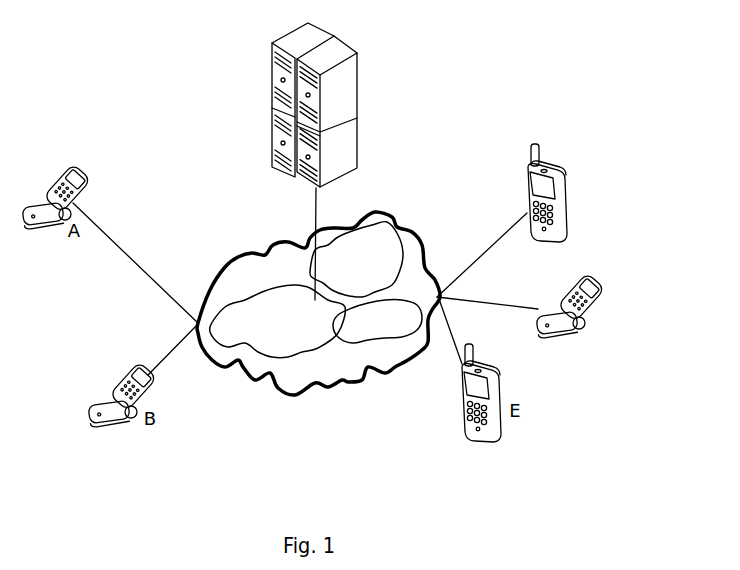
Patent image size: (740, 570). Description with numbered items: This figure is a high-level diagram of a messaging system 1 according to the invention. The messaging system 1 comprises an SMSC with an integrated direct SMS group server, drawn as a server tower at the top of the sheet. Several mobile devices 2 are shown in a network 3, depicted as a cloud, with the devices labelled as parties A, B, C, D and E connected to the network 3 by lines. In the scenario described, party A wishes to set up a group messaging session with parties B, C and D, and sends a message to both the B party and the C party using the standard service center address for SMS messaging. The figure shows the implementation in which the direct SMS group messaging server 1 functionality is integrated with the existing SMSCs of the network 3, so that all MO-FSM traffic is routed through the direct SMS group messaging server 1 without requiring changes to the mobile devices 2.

The messaging system 1 is at (200, 63).
The mobile devices 2 is at (597, 282).
The network 3 is at (364, 392).